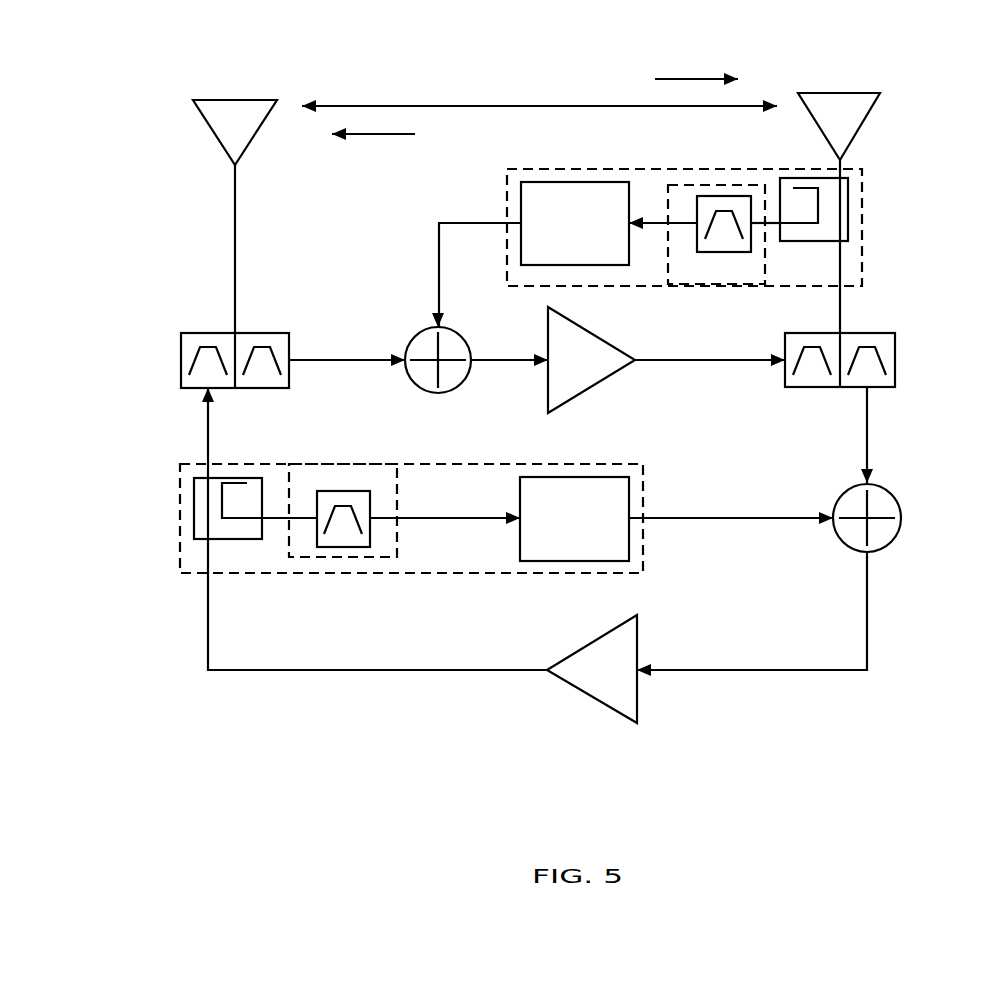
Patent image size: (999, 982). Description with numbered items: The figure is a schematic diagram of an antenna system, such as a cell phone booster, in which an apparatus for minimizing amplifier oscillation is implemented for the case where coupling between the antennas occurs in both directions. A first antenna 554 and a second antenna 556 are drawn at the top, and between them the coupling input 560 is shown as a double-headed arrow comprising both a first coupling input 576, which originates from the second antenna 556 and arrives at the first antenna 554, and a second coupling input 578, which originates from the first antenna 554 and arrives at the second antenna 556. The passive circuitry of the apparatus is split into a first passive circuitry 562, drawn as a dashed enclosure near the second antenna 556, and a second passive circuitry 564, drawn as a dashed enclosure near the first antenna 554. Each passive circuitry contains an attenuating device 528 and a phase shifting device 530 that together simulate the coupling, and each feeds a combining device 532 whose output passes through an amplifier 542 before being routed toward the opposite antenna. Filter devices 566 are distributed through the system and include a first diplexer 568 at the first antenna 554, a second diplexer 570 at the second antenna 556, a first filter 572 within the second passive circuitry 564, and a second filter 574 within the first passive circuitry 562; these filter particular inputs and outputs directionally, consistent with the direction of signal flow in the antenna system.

The attenuating device 528 is at (848, 207).
The phase shifting device 530 is at (574, 371).
The combining device 532 is at (420, 332).
The amplifier 542 is at (592, 515).
The first antenna 554 is at (235, 216).
The second antenna 556 is at (839, 213).
The coupling input 560 is at (522, 106).
The first passive circuitry 562 is at (655, 169).
The second passive circuitry 564 is at (643, 463).
The filter devices 566 is at (337, 489).
The first diplexer 568 is at (258, 333).
The second diplexer 570 is at (812, 387).
The first filter 572 is at (352, 491).
The second filter 574 is at (712, 252).
The first coupling input 576 is at (373, 134).
The second coupling input 578 is at (690, 79).